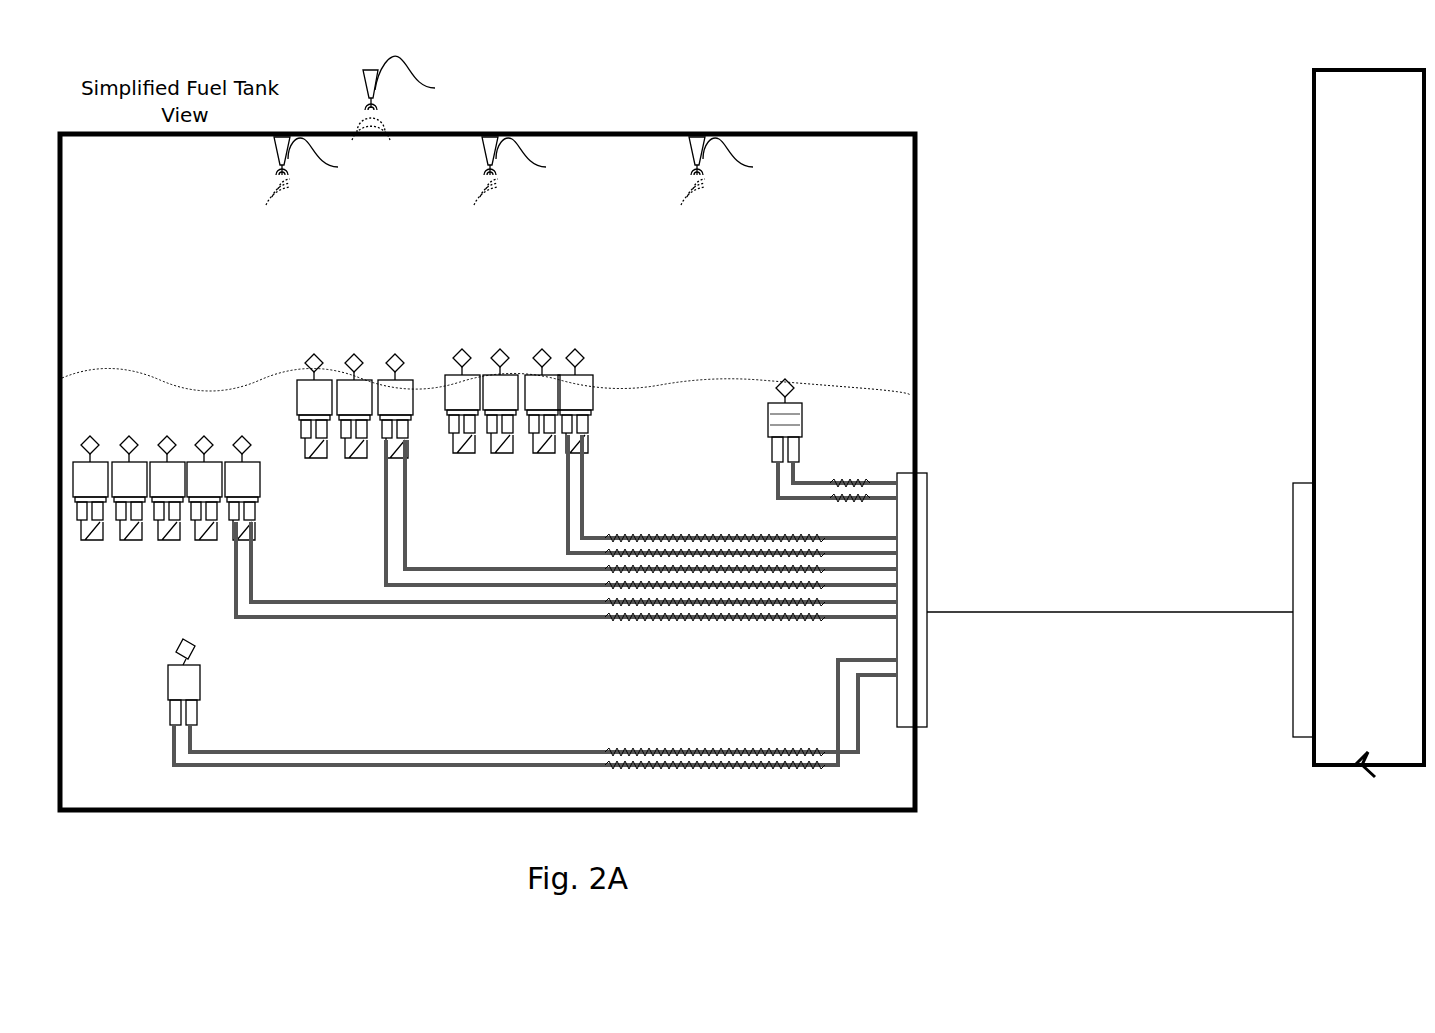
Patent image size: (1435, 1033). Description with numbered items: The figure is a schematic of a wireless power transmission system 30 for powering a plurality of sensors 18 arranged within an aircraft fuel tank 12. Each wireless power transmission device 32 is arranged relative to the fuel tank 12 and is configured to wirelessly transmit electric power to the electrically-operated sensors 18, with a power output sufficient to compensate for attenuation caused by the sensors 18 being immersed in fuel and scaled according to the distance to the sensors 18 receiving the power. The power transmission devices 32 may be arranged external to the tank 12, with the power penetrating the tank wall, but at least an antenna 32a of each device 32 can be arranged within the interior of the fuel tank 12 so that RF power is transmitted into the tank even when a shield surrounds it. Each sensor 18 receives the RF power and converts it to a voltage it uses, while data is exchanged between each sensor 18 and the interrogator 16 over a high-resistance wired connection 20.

The wireless power transmission system 30 is at (590, 82).
The fuel tank 12 is at (920, 205).
The interrogator 16 is at (1312, 205).
The sensor 18 is at (170, 337).
The high-resistance wired connection 20 is at (1082, 550).
The wireless power transmission device 32 is at (530, 130).
The antenna 32a is at (270, 180).